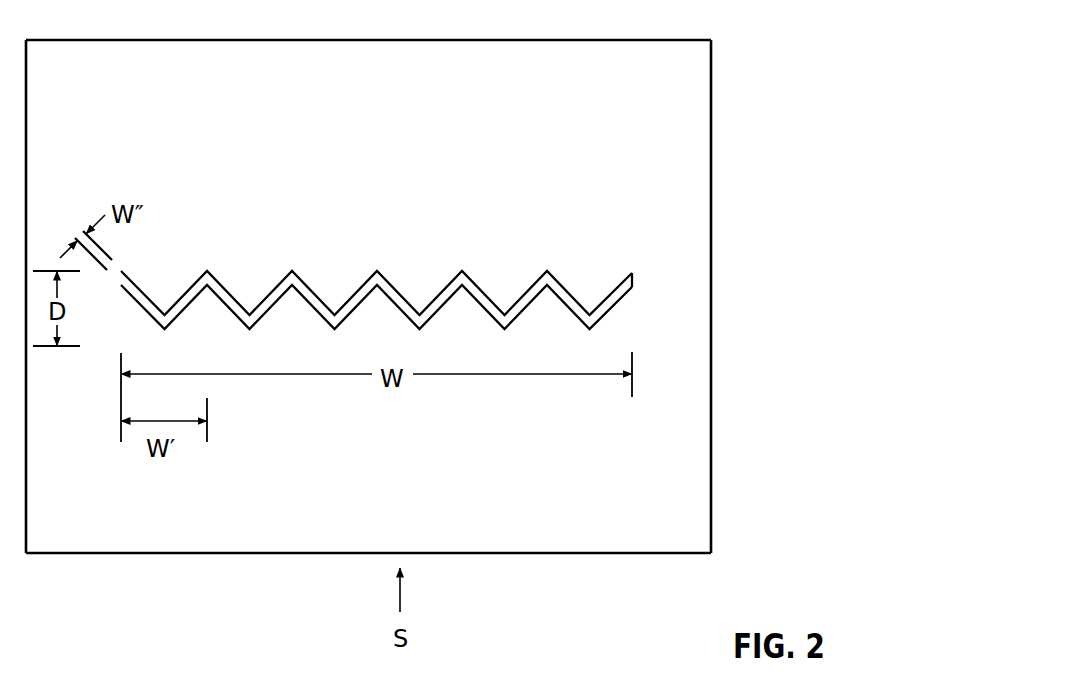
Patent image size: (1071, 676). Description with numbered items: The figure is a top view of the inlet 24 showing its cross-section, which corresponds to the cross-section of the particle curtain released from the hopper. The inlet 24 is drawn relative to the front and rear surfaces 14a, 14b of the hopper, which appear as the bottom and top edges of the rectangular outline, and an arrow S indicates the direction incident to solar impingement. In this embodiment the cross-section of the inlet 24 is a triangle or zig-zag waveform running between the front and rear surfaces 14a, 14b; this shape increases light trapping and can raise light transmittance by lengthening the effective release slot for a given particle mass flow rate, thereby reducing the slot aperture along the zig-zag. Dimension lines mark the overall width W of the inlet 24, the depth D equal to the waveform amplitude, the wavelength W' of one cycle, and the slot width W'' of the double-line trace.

The front surface of hopper 14a is at (631, 553).
The rear surface of hopper 14b is at (659, 40).
The inlet 24 is at (632, 275).